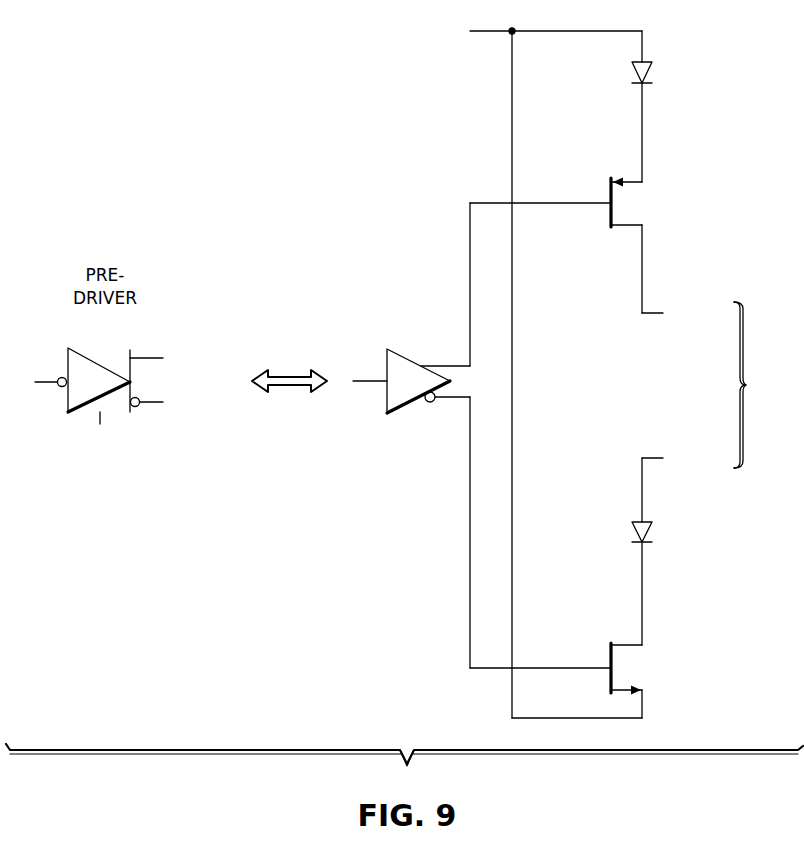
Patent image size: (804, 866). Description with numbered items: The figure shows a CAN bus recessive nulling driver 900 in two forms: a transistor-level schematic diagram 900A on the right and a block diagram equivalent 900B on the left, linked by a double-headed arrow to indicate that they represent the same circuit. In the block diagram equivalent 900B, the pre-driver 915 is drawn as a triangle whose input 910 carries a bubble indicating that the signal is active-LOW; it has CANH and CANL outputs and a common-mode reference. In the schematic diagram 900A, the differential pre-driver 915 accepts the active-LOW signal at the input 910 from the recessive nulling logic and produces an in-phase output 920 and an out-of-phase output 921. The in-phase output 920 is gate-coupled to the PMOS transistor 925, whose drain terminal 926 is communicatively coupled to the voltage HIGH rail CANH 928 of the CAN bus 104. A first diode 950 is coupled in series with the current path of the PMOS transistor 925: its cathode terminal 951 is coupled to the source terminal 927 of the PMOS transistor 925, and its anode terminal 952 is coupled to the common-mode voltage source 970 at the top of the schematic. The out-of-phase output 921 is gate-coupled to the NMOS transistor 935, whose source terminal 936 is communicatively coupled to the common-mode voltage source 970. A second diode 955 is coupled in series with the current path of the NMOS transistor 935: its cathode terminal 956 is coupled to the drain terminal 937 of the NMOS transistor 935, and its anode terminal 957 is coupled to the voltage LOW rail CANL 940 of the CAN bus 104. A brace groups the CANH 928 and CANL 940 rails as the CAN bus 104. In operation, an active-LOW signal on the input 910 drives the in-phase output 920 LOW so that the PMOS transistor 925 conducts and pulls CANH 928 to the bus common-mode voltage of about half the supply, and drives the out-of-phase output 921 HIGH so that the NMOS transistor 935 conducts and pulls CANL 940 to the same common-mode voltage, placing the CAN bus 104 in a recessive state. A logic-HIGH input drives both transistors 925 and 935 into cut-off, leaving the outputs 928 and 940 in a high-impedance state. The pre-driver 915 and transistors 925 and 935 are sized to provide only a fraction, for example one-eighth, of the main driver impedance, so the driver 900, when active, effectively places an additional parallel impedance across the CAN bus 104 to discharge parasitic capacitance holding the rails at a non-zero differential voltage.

The CAN bus recessive nulling driver 900 is at (140, 153).
The schematic diagram 900A is at (389, 190).
The block diagram equivalent 900B is at (191, 248).
The input 910 is at (48, 379).
The pre-driver 915 is at (86, 355).
The in-phase output 920 is at (470, 284).
The out-of-phase output 921 is at (470, 532).
The PMOS transistor 925 is at (586, 204).
The drain terminal 926 is at (628, 227).
The source terminal 927 is at (623, 180).
The voltage HIGH rail (CANH) 928 is at (650, 316).
The NMOS transistor 935 is at (612, 649).
The source terminal 936 is at (624, 686).
The drain terminal 937 is at (620, 645).
The voltage LOW rail (CANL) 940 is at (652, 457).
The first diode 950 is at (639, 66).
The cathode terminal 951 is at (650, 84).
The anode terminal 952 is at (653, 68).
The second diode 955 is at (645, 525).
The cathode terminal 956 is at (632, 543).
The anode terminal 957 is at (633, 528).
The common-mode voltage source 970 is at (418, 28).
The CAN bus 104 is at (765, 385).